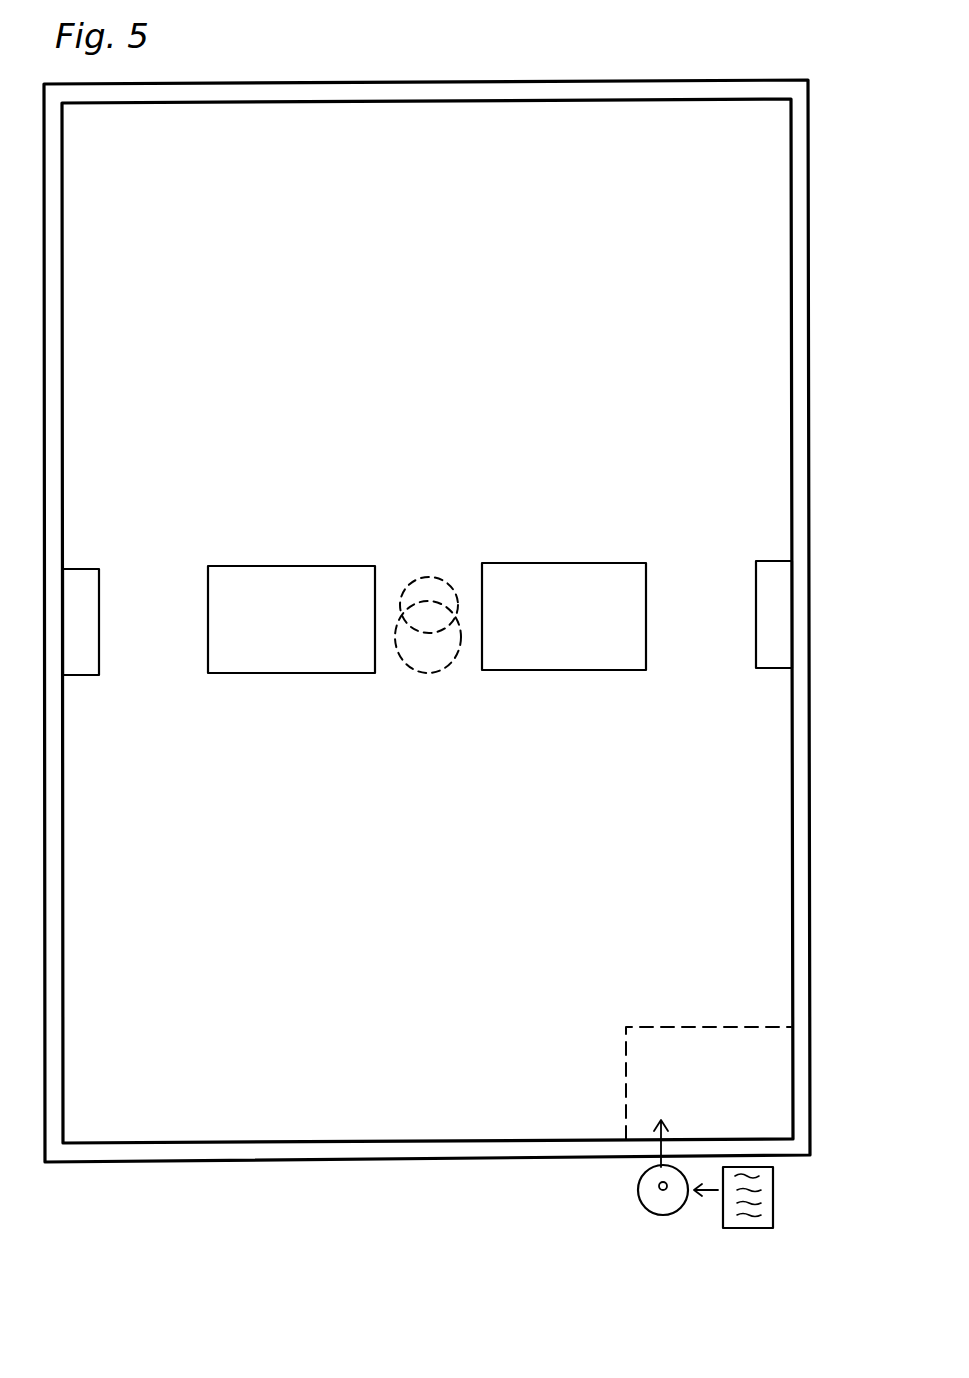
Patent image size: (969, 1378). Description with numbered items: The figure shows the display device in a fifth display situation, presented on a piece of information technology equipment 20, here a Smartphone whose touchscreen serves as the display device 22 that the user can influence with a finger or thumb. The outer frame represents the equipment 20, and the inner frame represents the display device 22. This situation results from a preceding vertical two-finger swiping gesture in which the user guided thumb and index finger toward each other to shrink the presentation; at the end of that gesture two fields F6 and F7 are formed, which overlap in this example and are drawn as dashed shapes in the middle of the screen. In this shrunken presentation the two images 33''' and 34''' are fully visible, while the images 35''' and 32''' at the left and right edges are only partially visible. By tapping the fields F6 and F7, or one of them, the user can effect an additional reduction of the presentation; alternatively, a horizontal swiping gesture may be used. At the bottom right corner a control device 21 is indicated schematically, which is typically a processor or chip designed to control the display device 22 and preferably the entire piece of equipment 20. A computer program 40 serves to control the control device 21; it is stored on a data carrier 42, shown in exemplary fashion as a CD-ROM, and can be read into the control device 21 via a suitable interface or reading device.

The piece of information technology equipment 20 is at (292, 92).
The display device 22 is at (417, 130).
The control device 21 is at (782, 1127).
The image 35''' is at (116, 596).
The image 34''' is at (291, 591).
The image 33''' is at (595, 586).
The image 32''' is at (775, 585).
The field F6 is at (435, 575).
The field F7 is at (447, 663).
The computer program 40 is at (638, 1188).
The data carrier 42 is at (722, 1212).